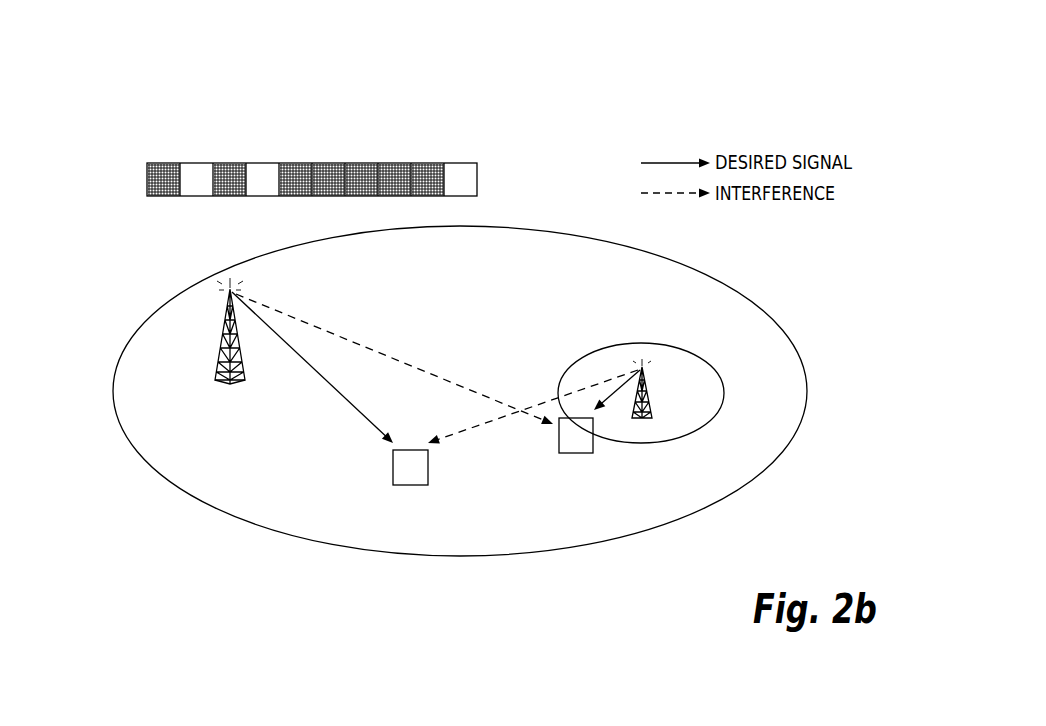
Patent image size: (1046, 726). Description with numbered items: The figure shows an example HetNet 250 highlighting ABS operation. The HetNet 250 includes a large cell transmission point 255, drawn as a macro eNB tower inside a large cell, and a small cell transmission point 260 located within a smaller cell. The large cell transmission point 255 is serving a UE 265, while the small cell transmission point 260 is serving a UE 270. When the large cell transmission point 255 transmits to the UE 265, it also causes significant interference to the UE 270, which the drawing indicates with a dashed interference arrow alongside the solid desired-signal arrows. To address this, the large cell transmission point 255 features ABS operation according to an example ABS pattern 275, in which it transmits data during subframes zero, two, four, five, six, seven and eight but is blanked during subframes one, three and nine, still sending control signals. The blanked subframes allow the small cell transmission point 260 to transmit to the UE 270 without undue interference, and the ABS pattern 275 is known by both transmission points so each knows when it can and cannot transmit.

The HetNet 250 is at (130, 73).
The large cell transmission point 255 is at (213, 357).
The small cell transmission point 260 is at (652, 393).
The UE 265 is at (393, 470).
The UE 270 is at (559, 443).
The ABS pattern 275 is at (494, 158).